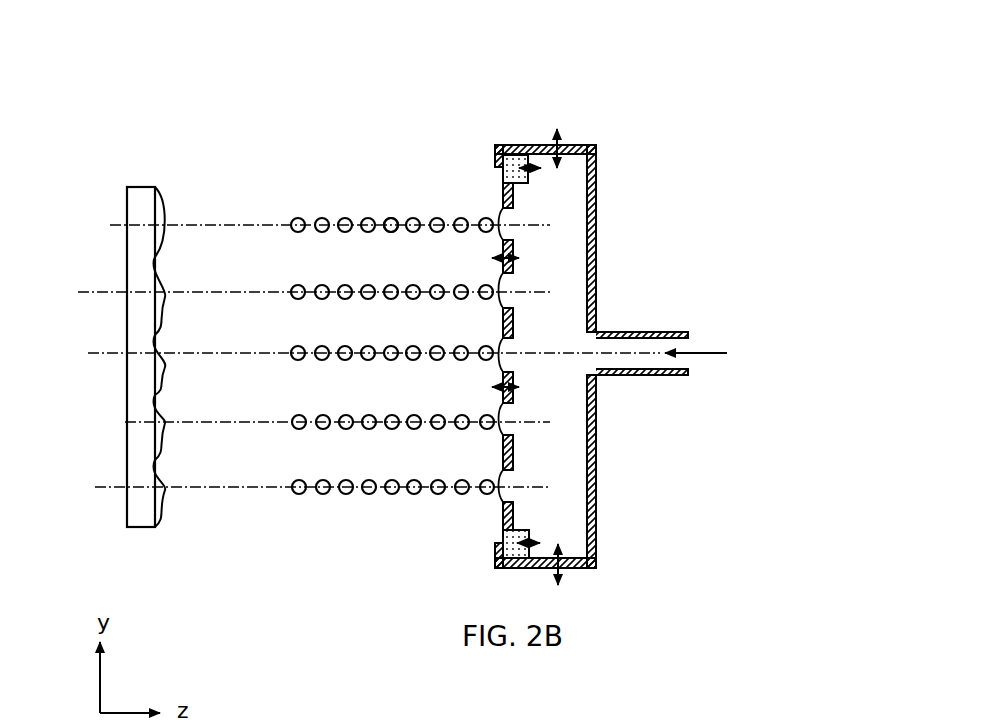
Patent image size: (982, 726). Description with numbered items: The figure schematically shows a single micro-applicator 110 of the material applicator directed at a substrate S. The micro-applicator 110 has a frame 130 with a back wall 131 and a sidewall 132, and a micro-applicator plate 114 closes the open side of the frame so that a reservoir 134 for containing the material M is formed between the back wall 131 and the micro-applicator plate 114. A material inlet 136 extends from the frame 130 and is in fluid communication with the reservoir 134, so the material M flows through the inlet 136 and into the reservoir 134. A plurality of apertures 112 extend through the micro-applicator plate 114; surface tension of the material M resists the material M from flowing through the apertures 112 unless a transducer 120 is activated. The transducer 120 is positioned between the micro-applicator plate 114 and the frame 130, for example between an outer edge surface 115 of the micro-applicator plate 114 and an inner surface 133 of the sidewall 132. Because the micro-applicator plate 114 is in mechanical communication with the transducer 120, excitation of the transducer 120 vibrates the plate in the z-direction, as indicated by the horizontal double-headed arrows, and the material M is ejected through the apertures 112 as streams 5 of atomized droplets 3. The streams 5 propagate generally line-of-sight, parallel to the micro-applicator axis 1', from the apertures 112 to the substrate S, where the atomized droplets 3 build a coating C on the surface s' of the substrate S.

The micro-applicator 110 is at (768, 97).
The frame 130 is at (632, 344).
The sidewall 132 is at (596, 145).
The inner surface 133 is at (568, 558).
The back wall 131 is at (597, 506).
The reservoir 134 is at (566, 240).
The material inlet 136 is at (686, 380).
The micro-applicator plate 114 is at (500, 194).
The transducer 120 is at (503, 538).
The apertures 112 is at (513, 228).
The outer edge surface 115 is at (512, 527).
The streams 5 is at (331, 206).
The atomized droplets 3 is at (391, 216).
The micro-applicator axis 1' is at (369, 356).
The substrate S is at (110, 184).
The coating C is at (160, 213).
The surface s' is at (116, 310).
The material M is at (710, 353).